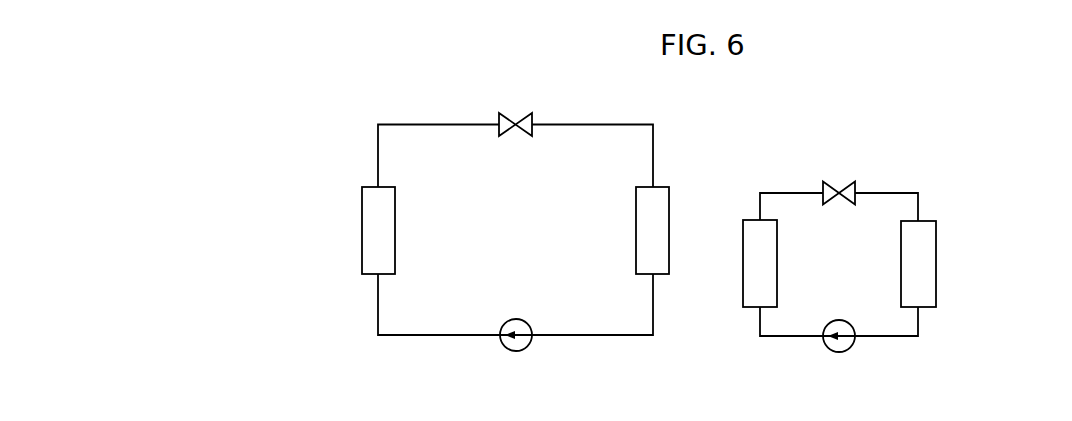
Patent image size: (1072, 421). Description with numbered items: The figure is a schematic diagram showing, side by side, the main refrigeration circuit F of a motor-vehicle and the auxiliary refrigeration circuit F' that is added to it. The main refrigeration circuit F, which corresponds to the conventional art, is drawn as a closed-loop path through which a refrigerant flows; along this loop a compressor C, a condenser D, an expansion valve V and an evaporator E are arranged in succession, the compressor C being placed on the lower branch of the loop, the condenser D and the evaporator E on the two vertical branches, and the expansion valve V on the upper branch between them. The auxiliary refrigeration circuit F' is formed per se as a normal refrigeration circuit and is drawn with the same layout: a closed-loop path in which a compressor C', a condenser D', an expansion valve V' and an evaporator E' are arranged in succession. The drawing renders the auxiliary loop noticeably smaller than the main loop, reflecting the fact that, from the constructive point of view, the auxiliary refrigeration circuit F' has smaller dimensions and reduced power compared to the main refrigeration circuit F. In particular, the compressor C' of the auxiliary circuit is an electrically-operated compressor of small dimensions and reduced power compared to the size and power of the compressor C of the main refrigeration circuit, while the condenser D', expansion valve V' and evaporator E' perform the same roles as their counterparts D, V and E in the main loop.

The main refrigeration circuit F is at (456, 211).
The expansion valve V is at (500, 104).
The condenser D is at (345, 230).
The evaporator E is at (666, 230).
The compressor C is at (497, 352).
The auxiliary refrigeration circuit F' is at (899, 242).
The expansion valve V' is at (850, 170).
The condenser D' is at (744, 264).
The evaporator E' is at (948, 264).
The compressor C' is at (851, 355).